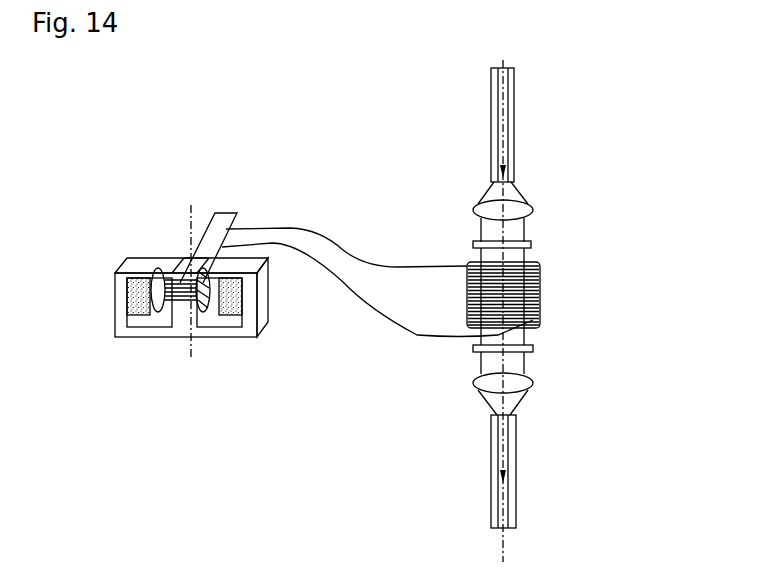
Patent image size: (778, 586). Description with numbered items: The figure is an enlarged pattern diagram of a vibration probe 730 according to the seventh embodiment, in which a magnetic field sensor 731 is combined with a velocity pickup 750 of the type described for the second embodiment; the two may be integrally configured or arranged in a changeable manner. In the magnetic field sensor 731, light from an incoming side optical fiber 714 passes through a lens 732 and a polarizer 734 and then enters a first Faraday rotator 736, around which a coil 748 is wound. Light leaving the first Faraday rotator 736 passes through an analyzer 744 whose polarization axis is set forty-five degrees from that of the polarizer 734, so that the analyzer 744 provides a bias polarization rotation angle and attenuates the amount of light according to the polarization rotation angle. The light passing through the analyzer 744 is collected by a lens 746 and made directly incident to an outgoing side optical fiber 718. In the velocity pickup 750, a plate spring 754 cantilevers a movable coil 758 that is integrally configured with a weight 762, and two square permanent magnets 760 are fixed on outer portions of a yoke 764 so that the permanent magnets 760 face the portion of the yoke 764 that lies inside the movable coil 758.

The incoming side optical fiber 714 is at (521, 125).
The outgoing side optical fiber 718 is at (505, 465).
The vibration probe 730 is at (271, 177).
The magnetic field sensor 731 is at (547, 208).
The lens 732 is at (483, 210).
The polarizer 734 is at (473, 245).
The first Faraday rotator 736 is at (525, 263).
The analyzer 744 is at (533, 348).
The lens 746 is at (520, 384).
The coil 748 is at (540, 292).
The velocity pickup 750 is at (104, 226).
The plate spring 754 is at (220, 219).
The movable coil 758 is at (172, 278).
The permanent magnets 760 is at (133, 294).
The weight 762 is at (158, 313).
The yoke 764 is at (130, 333).